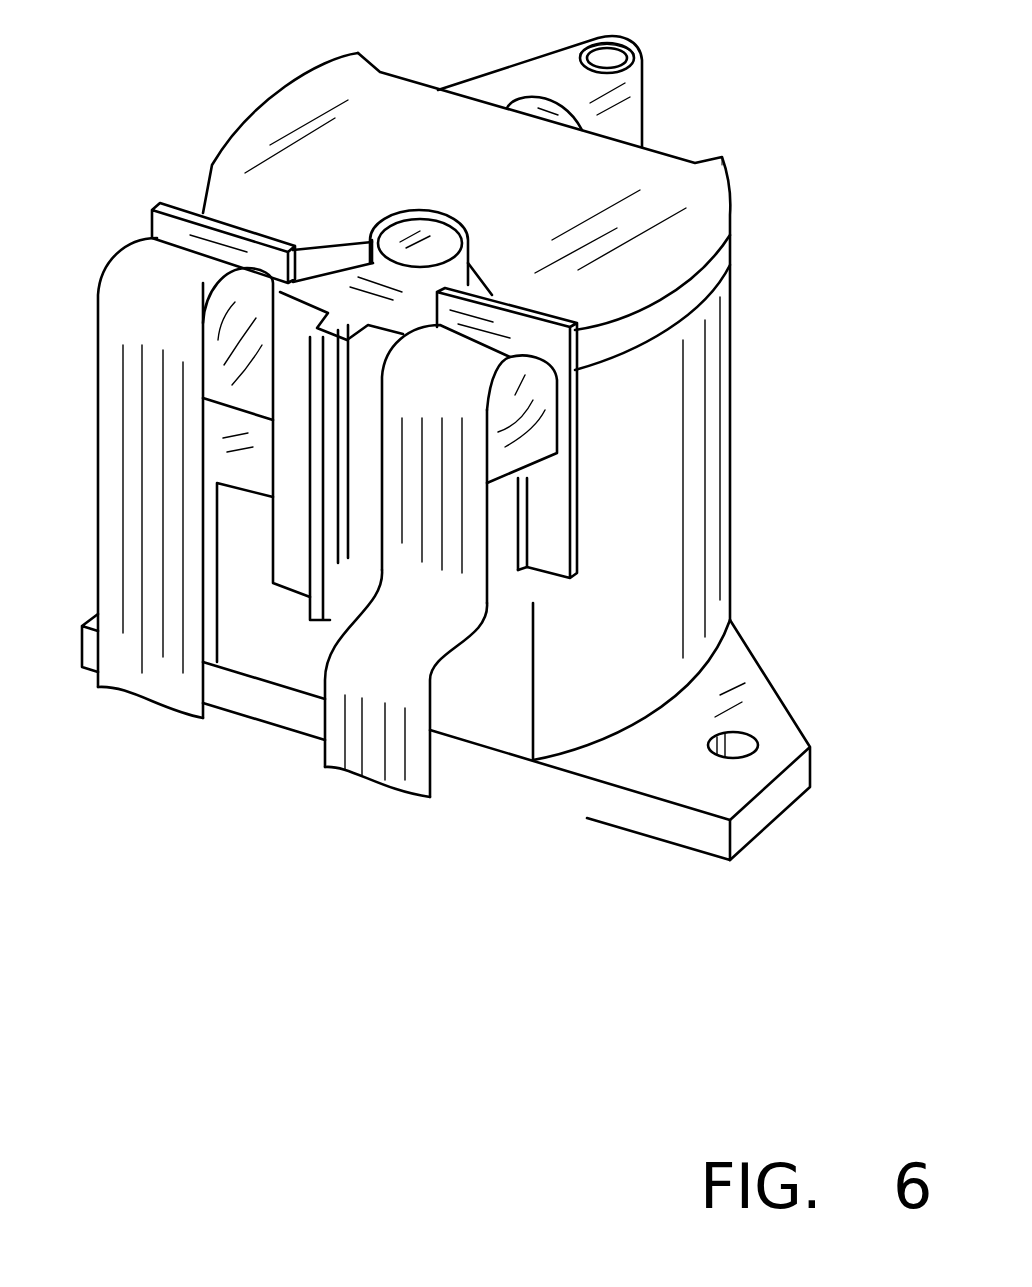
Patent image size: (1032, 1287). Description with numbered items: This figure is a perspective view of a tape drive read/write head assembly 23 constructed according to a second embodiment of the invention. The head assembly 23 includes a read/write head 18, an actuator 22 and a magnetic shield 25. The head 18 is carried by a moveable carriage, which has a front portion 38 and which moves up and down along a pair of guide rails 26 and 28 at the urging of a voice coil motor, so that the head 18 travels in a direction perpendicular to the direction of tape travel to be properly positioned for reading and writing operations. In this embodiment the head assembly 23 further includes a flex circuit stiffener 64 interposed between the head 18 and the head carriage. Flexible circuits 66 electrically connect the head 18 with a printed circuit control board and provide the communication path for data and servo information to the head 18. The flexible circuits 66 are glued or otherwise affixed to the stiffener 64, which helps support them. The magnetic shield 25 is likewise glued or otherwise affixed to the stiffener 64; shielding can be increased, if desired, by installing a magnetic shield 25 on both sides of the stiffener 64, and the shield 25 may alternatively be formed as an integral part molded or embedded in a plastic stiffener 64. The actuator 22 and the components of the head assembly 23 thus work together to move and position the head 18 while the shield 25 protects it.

The head 18 is at (333, 608).
The actuator 22 is at (812, 253).
The head assembly 23 is at (668, 167).
The magnetic shield 25 is at (507, 553).
The guide rail 26 is at (418, 227).
The guide rail 28 is at (545, 103).
The front portion 38 is at (790, 740).
The flex circuit stiffener 64 is at (172, 205).
The flexible circuits 66 is at (118, 566).